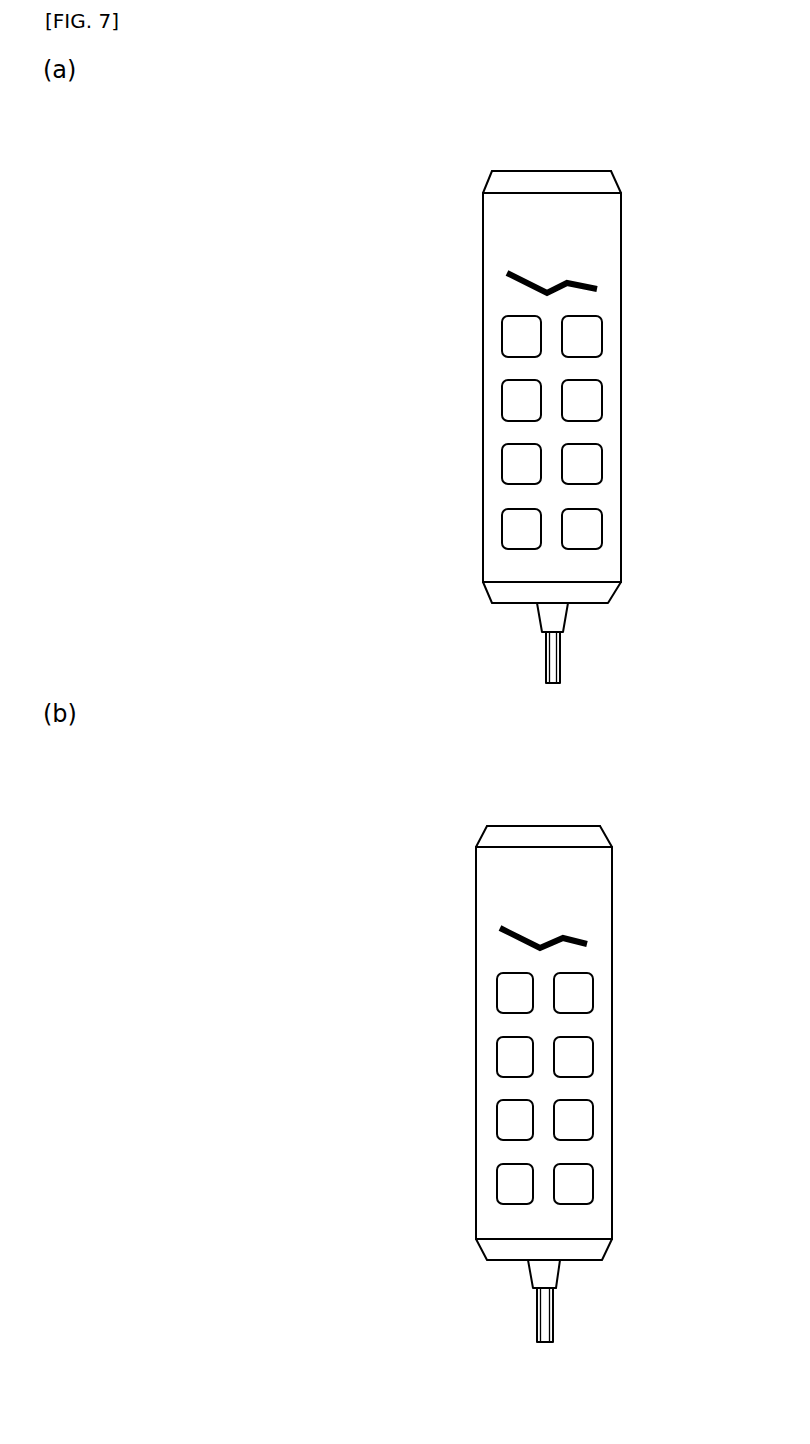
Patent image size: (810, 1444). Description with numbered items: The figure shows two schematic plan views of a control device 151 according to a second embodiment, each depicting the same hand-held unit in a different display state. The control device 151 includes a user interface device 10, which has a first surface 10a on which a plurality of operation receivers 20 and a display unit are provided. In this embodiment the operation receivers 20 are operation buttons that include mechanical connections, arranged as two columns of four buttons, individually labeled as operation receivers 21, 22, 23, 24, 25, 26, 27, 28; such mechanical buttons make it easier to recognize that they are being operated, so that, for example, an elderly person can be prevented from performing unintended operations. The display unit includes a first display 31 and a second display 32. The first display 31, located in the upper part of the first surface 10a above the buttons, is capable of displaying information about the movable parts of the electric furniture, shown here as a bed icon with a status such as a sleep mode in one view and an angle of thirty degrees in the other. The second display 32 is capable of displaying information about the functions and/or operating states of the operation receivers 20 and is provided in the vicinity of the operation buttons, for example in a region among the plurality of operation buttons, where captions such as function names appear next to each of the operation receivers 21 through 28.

The user interface device 10 is at (480, 222).
The first surface 10a is at (493, 308).
The control device 151 is at (598, 160).
The operation receivers 20 is at (430, 327).
The operation receiver 21 is at (502, 338).
The operation receiver 22 is at (602, 338).
The operation receiver 23 is at (502, 401).
The operation receiver 24 is at (602, 401).
The operation receiver 25 is at (502, 466).
The operation receiver 26 is at (602, 466).
The operation receiver 27 is at (502, 533).
The operation receiver 28 is at (602, 533).
The first display 31 is at (605, 240).
The second display 32 is at (508, 572).